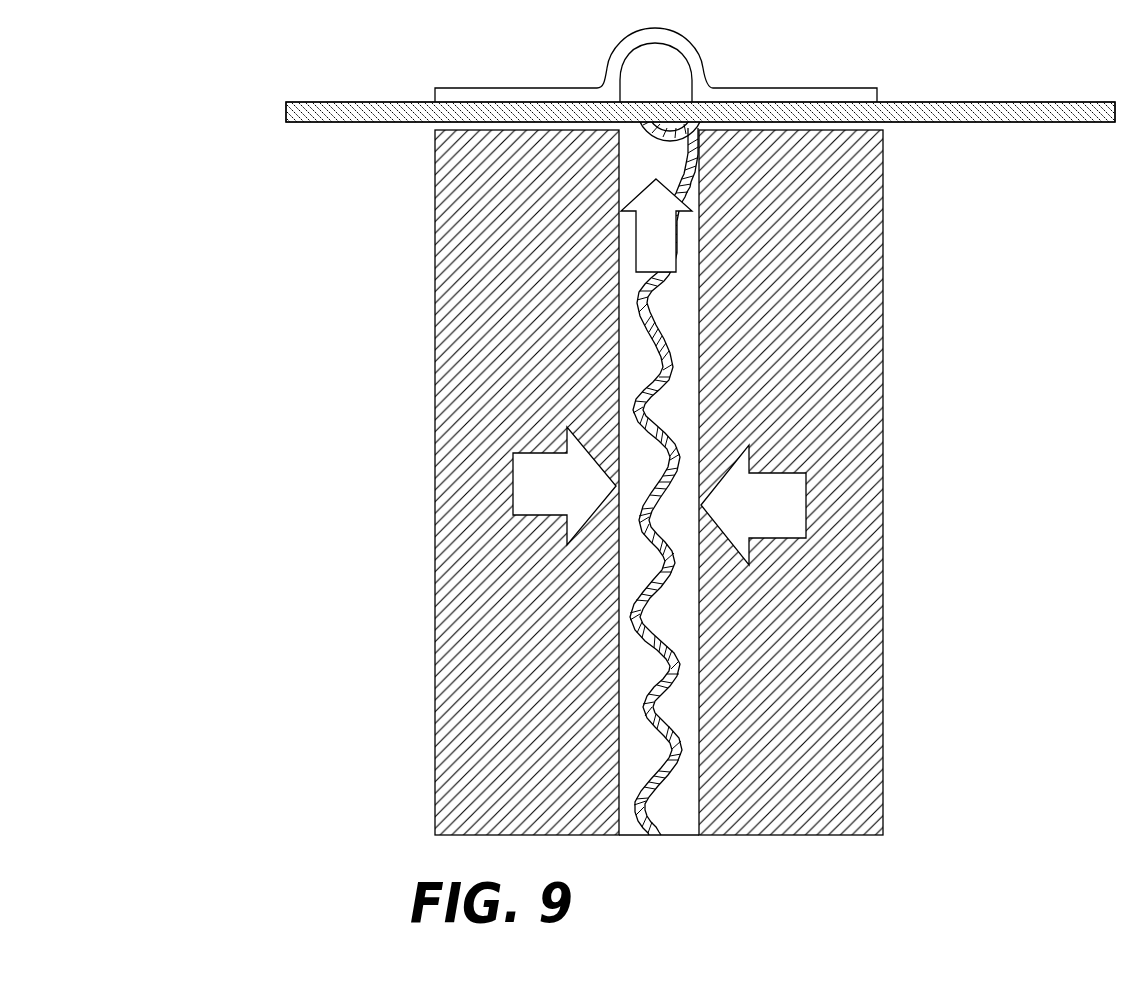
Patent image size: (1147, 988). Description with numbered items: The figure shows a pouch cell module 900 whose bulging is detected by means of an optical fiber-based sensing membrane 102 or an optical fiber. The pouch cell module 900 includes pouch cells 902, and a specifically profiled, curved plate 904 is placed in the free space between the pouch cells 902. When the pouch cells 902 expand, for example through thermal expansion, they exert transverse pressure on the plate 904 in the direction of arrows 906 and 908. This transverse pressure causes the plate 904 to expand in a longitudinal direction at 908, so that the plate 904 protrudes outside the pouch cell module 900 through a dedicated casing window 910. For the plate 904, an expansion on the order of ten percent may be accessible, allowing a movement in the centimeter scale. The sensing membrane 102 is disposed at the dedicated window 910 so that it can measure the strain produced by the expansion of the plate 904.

The pouch cell module 900 is at (195, 99).
The sensing membrane 102 is at (297, 121).
The pouch cells 902 is at (833, 232).
The plate 904 is at (657, 783).
The arrow 906 is at (540, 467).
The arrow 908 is at (637, 192).
The casing window 910 is at (675, 95).